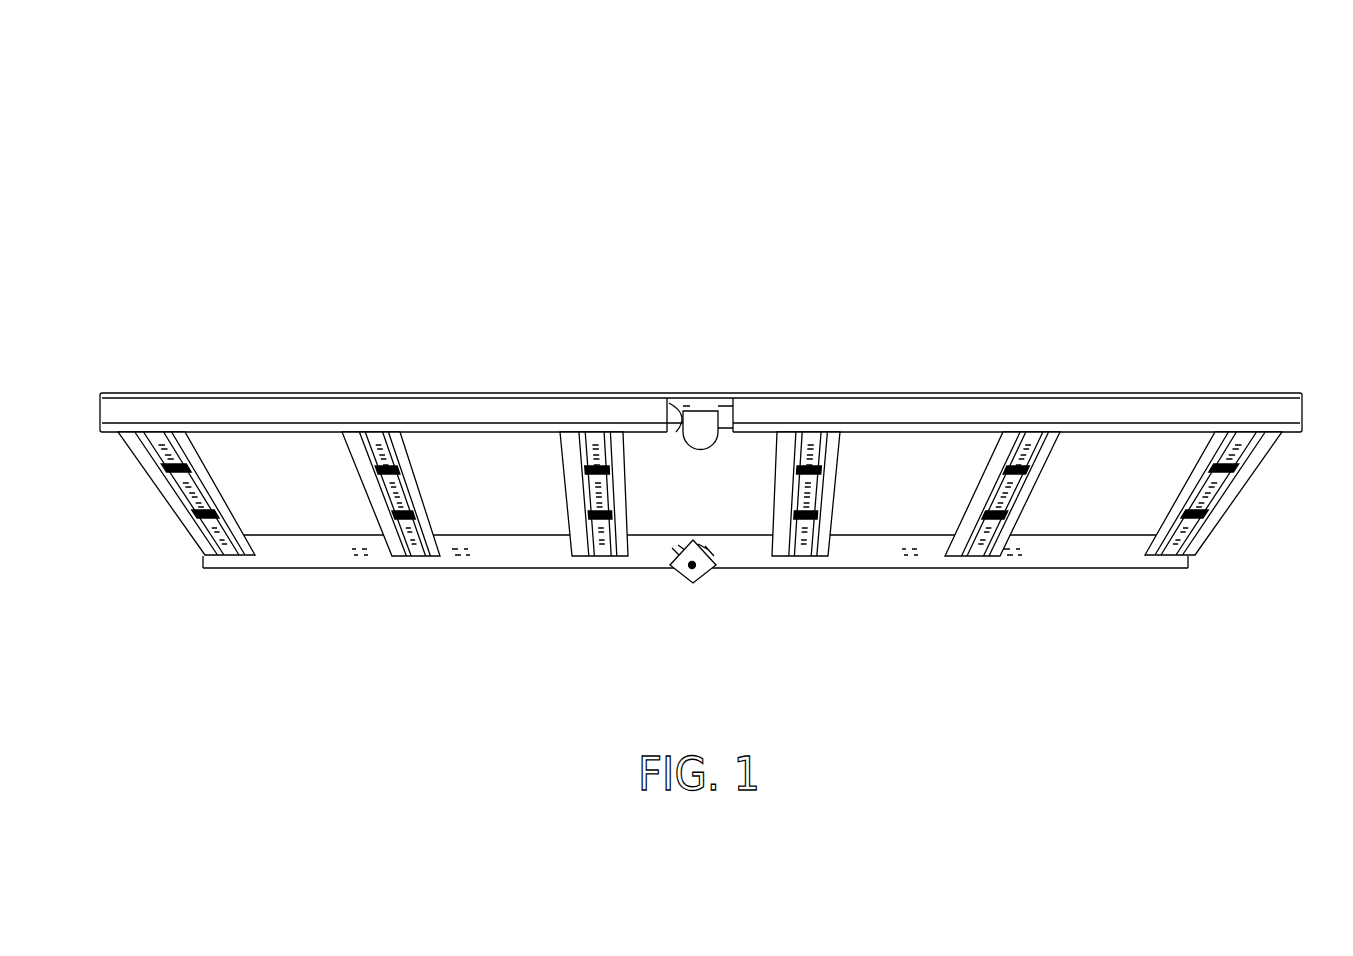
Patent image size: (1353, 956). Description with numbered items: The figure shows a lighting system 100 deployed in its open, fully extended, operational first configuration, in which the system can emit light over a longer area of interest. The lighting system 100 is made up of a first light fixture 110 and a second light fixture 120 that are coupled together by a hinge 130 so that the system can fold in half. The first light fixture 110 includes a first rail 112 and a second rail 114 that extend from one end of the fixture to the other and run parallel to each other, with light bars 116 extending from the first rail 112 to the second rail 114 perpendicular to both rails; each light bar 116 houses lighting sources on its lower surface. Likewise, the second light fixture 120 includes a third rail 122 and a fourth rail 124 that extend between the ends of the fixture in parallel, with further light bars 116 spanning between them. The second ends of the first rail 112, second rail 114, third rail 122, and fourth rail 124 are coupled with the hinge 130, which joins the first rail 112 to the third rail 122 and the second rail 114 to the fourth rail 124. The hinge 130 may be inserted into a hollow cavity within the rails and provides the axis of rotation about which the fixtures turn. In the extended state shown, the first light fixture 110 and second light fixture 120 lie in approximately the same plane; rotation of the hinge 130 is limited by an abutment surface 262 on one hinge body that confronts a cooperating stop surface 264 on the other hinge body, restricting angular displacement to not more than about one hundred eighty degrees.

The lighting system 100 is at (262, 160).
The first light fixture 110 is at (425, 352).
The first rail 112 is at (231, 415).
The second rail 114 is at (343, 552).
The light bar 116 is at (438, 522).
The second light fixture 120 is at (990, 340).
The third rail 122 is at (1115, 405).
The fourth rail 124 is at (1048, 552).
The hinge 130 is at (706, 398).
The abutment surface 262 is at (695, 395).
The stop surface 264 is at (704, 394).